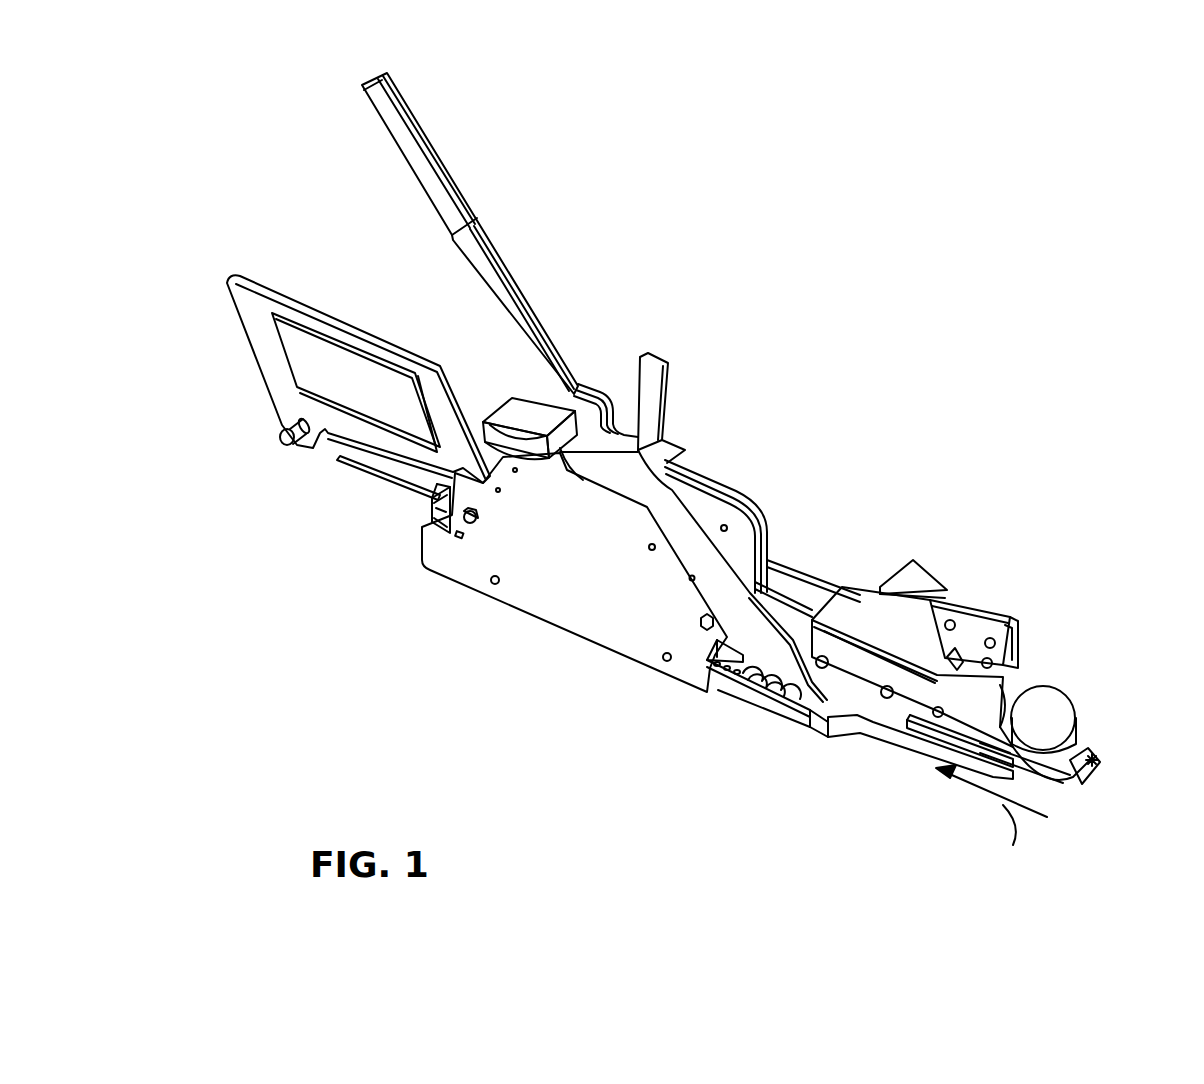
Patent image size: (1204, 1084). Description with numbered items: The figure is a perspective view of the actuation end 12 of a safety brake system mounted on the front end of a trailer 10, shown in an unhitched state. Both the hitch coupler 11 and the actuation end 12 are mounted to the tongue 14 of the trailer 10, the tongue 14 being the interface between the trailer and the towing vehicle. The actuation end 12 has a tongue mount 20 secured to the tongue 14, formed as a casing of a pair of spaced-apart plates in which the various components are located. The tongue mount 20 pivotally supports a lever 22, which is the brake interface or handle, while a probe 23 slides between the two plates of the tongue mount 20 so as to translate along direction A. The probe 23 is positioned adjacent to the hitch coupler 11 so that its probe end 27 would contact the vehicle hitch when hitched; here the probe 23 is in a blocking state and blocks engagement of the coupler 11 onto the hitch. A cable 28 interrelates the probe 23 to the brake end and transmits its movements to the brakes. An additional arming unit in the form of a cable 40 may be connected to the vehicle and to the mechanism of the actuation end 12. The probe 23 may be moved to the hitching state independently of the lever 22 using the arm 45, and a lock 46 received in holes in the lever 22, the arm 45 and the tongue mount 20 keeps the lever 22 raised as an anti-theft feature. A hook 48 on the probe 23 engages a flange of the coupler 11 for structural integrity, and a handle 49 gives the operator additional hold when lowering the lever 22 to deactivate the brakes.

The trailer 10 is at (828, 434).
The hitch coupler 11 is at (917, 633).
The actuation end 12 is at (535, 656).
The tongue 14 is at (430, 512).
The tongue mount 20 is at (612, 623).
The lever 22 is at (490, 246).
The probe 23 is at (872, 718).
The probe end 27 is at (1007, 777).
The cable 28 is at (360, 473).
The cable 40 is at (785, 603).
The arm 45 is at (695, 537).
The lock 46 is at (505, 410).
The hook 48 is at (1098, 755).
The handle 49 is at (282, 292).